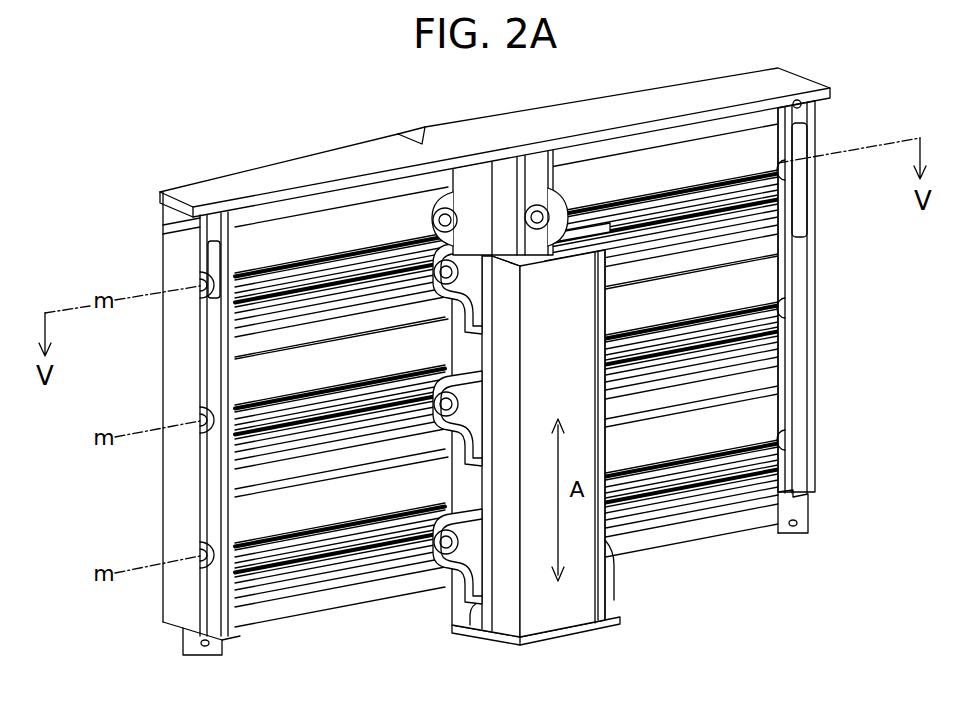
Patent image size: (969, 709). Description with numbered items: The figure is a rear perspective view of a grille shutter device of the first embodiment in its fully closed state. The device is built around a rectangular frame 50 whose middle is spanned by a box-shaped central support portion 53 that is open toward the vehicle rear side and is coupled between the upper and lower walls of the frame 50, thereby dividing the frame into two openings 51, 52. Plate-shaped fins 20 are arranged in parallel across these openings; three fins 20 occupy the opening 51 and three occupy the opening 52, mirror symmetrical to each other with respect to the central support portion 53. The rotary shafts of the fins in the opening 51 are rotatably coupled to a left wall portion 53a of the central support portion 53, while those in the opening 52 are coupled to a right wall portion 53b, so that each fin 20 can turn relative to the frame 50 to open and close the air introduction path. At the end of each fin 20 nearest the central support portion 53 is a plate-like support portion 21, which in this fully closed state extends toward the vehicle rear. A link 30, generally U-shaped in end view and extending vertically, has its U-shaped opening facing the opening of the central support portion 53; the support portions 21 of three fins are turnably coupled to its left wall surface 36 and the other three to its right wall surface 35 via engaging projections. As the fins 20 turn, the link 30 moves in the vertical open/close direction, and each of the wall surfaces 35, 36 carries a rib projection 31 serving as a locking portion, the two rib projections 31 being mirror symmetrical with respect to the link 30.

The fin 20 is at (262, 240).
The support portion 21 is at (452, 364).
The link 30 is at (583, 605).
The rib projection 31 is at (612, 558).
The right wall surface 35 is at (604, 356).
The left wall surface 36 is at (485, 373).
The frame 50 is at (516, 134).
The opening 51 is at (428, 165).
The opening 52 is at (788, 241).
The central support portion 53 is at (497, 163).
The left wall portion 53a is at (443, 198).
The right wall portion 53b is at (560, 165).